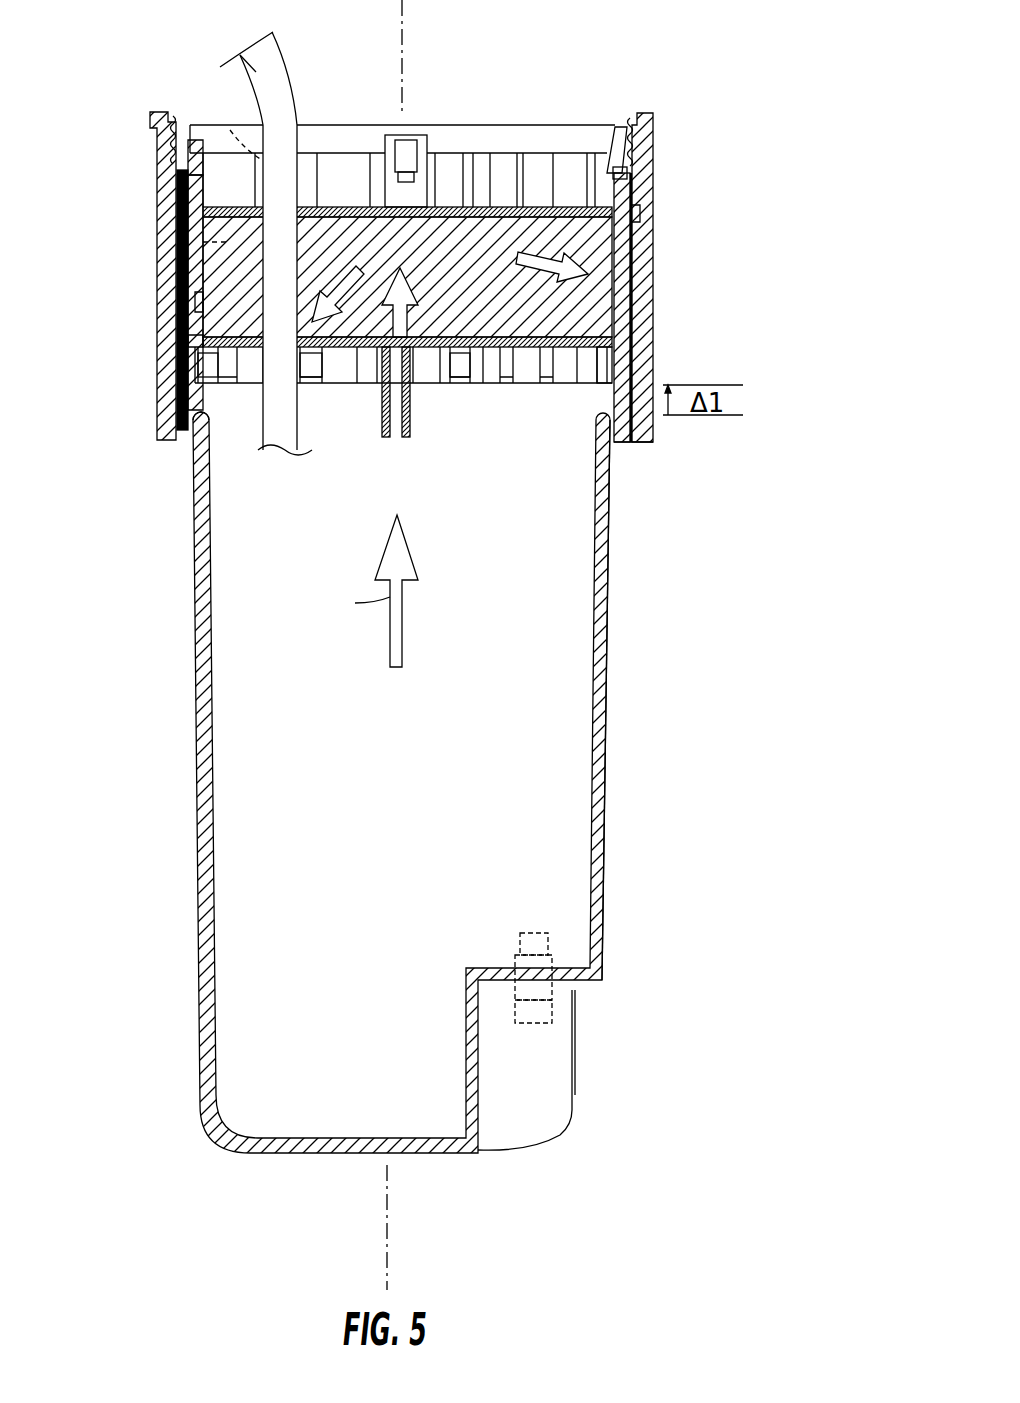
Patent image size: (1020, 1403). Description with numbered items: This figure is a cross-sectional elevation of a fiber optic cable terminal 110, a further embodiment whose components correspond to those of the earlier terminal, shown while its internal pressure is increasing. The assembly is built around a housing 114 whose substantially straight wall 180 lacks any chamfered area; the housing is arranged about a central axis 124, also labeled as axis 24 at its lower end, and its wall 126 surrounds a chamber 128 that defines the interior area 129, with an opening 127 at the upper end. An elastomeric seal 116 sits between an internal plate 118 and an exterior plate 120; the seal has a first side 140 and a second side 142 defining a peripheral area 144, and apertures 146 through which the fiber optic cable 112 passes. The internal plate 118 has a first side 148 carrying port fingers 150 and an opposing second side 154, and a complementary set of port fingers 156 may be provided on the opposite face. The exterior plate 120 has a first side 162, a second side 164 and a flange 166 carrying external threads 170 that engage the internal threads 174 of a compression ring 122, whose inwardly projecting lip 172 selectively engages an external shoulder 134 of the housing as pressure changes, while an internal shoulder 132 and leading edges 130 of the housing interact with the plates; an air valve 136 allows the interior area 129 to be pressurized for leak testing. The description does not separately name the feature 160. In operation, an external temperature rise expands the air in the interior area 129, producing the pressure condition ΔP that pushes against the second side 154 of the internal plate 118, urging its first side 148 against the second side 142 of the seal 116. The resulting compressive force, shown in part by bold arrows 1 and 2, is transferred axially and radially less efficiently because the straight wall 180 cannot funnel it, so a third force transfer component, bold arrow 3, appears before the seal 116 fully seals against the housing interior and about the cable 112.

The fiber optic cable terminal 110 is at (780, 132).
The fiber optic cable 112 is at (248, 50).
The housing 114 is at (628, 558).
The seal 116 is at (650, 248).
The internal plate 118 is at (652, 337).
The seal 120 is at (602, 122).
The cover 122 is at (157, 392).
The central axis 124 is at (408, 50).
The housing side wall 126 is at (607, 640).
The hidden contour 127 is at (230, 130).
The upper end cap 128 is at (481, 165).
The interior area 129 is at (536, 491).
The housing neck 130 is at (640, 178).
The cartridge bottom edge 132 is at (610, 405).
The cover lower flange 134 is at (627, 447).
The drain valve 136 is at (553, 997).
The seal ring 140 is at (183, 215).
The second side 142 is at (510, 386).
The inner neck wall 144 is at (195, 280).
The hidden line 146 is at (203, 242).
The first side 148 is at (458, 370).
The groove 150 is at (200, 300).
The second side 154 is at (195, 372).
The rib 156 is at (303, 375).
The neck lower end 160 is at (190, 338).
The seal seat 162 is at (618, 177).
The shoulder 164 is at (645, 216).
The threads 166 is at (637, 157).
The neck upper flange 170 is at (188, 143).
The bowl rim 172 is at (194, 445).
The threads 174 is at (172, 118).
The substantially straight wall 180 is at (648, 285).
The longitudinal axis 24 is at (387, 1210).
The bold arrow 1 is at (420, 280).
The bold arrow 2 is at (530, 282).
The bold arrow 3 is at (353, 253).